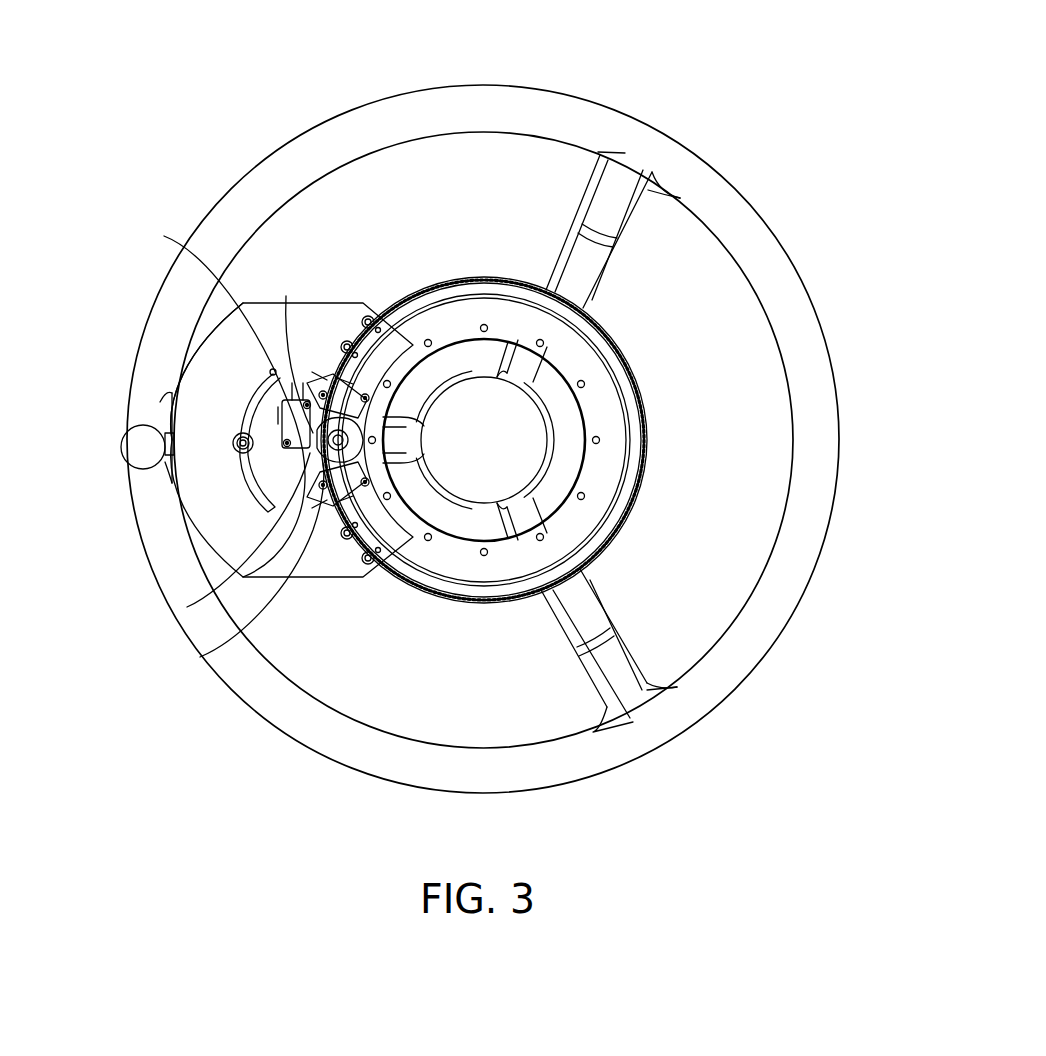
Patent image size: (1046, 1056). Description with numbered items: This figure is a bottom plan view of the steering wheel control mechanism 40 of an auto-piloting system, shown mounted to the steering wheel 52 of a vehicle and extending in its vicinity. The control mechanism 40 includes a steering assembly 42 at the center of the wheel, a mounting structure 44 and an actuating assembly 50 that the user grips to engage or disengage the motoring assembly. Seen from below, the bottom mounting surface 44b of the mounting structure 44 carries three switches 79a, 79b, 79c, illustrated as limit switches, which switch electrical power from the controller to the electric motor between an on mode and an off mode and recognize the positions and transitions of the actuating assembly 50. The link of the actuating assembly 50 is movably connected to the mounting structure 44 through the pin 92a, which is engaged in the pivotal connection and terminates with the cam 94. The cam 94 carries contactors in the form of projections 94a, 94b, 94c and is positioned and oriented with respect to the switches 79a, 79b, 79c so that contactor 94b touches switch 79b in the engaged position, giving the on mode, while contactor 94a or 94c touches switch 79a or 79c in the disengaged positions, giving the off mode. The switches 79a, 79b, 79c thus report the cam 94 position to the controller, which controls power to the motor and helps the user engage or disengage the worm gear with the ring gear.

The steering wheel control mechanism 40 is at (614, 81).
The steering assembly 42 is at (496, 266).
The mounting structure 44 is at (302, 584).
The bottom mounting surface 44b is at (230, 521).
The actuating assembly 50 is at (108, 452).
The steering wheel 52 is at (770, 225).
The switch 79a is at (335, 497).
The switch 79b is at (313, 433).
The switch 79c is at (337, 380).
The pin 92a is at (350, 447).
The cam 94 is at (217, 399).
The projection 94a is at (200, 657).
The projection 94b is at (187, 607).
The projection 94c is at (290, 351).